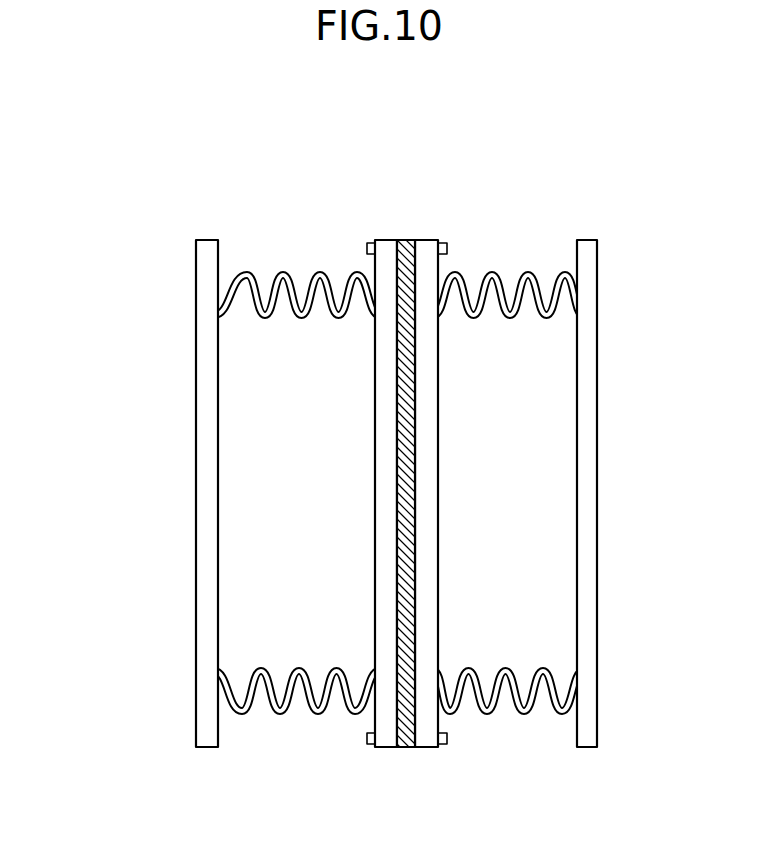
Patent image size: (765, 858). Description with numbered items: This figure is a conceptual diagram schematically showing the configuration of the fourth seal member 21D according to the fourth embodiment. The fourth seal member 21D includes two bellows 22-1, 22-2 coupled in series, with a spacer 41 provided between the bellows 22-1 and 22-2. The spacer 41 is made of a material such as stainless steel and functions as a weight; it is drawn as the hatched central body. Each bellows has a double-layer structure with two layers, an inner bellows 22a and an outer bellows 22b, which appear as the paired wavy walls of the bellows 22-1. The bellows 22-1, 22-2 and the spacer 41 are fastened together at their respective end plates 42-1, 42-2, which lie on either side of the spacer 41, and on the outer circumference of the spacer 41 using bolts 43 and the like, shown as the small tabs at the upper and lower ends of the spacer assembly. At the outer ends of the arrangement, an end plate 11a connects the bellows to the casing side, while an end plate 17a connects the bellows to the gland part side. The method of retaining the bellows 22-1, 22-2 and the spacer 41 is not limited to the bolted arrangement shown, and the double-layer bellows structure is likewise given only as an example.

The fourth seal member 21D is at (394, 429).
The spacer 41 is at (404, 240).
The end plate 42-1 is at (375, 630).
The end plate 42-2 is at (438, 642).
The bolt 43 is at (447, 245).
The bellows 22-1 is at (200, 346).
The bellows 22-2 is at (538, 732).
The inner bellows 22a is at (258, 310).
The outer bellows 22b is at (238, 342).
The end plate 11a is at (197, 572).
The end plate 17a is at (597, 572).